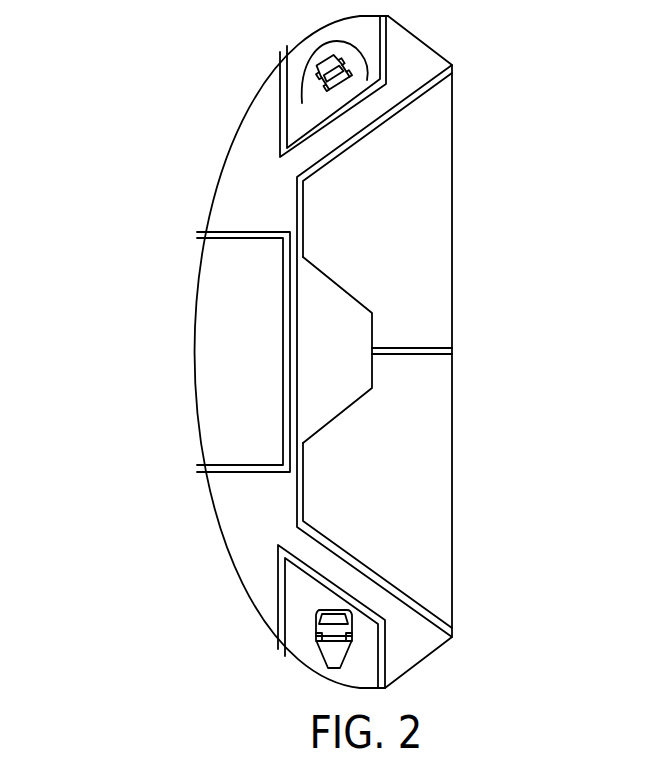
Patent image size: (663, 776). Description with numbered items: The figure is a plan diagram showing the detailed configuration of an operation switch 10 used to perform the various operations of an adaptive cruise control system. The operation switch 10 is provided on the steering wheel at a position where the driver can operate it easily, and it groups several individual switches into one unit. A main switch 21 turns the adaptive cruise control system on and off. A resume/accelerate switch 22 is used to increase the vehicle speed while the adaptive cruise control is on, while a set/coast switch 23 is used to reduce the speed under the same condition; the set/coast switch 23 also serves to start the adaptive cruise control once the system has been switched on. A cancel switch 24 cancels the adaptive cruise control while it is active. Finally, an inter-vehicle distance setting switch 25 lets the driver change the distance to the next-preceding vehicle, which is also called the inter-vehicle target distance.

The operation switch 10 is at (118, 249).
The main switch 21 is at (190, 352).
The resume/accelerate switch 22 is at (445, 186).
The set/coast switch 23 is at (445, 520).
The cancel switch 24 is at (368, 333).
The inter-vehicle distance setting switch 25 is at (327, 668).